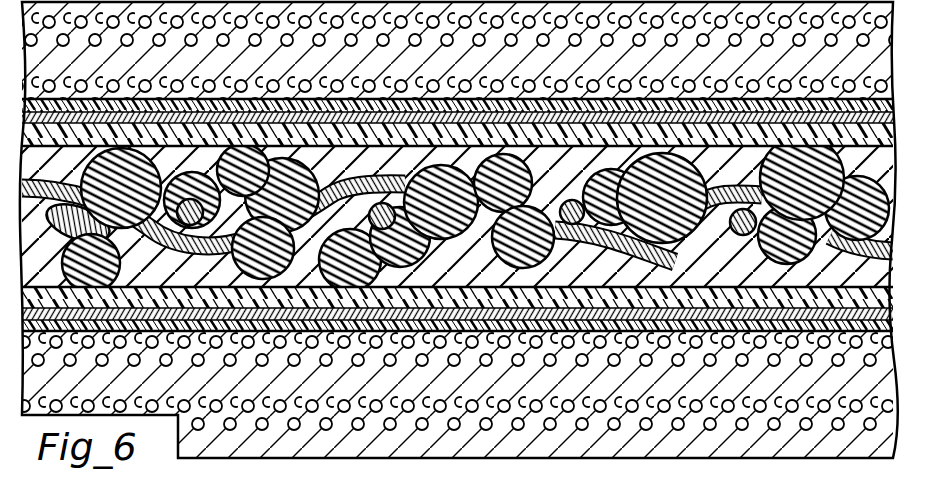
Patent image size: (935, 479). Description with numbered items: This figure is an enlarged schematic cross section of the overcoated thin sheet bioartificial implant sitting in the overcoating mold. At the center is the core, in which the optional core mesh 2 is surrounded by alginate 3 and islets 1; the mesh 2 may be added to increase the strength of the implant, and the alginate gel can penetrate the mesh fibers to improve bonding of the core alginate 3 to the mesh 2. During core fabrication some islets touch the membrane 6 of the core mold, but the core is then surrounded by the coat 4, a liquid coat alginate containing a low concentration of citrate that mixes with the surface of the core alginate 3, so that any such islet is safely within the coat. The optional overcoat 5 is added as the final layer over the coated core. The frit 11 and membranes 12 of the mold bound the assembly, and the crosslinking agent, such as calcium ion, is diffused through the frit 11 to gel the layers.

The islets 1 is at (111, 200).
The core mesh 2 is at (166, 250).
The alginate 3 is at (412, 177).
The coat 4 is at (323, 126).
The overcoat 5 is at (357, 117).
The membrane of the core mold 6 is at (792, 187).
The frit 11 is at (409, 62).
The membranes 12 is at (528, 135).